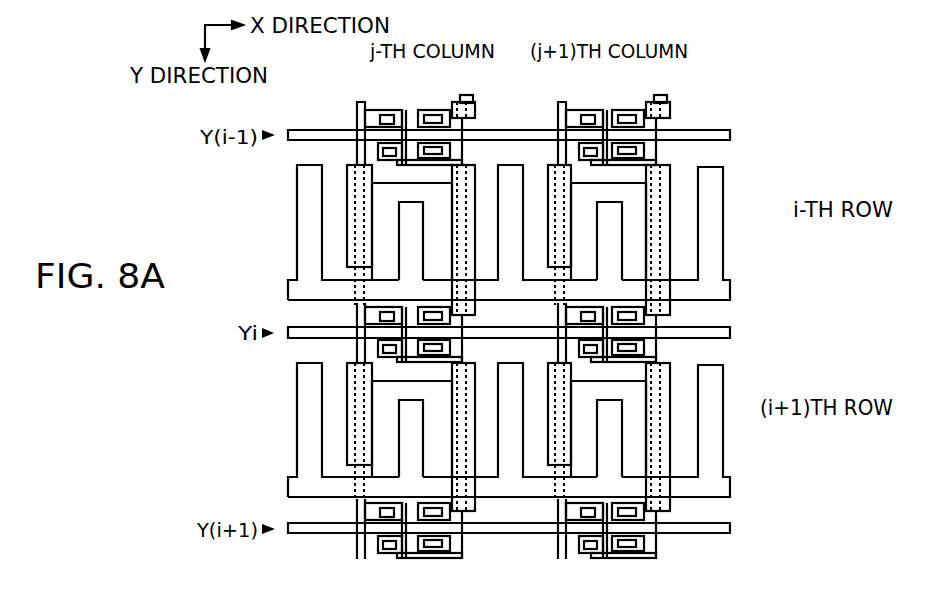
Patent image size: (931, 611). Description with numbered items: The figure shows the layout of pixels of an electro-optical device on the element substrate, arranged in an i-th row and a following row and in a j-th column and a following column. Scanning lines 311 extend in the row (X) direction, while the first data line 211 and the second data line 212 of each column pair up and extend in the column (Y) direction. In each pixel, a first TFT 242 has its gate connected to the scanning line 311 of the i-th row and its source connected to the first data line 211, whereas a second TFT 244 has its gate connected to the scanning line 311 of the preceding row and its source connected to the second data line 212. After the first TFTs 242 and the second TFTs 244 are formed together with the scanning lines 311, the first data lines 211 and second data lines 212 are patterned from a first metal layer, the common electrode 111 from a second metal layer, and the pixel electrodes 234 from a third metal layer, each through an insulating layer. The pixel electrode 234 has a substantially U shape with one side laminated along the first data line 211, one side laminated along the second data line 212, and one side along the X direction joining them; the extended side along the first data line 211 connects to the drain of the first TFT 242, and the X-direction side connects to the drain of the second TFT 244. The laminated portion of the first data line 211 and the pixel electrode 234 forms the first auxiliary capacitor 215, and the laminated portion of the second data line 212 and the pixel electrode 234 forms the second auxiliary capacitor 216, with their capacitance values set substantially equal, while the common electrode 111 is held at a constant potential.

The common electrode 111 is at (723, 266).
The first data line 211 is at (460, 108).
The second data line 212 is at (357, 120).
The first auxiliary capacitor 215 is at (473, 183).
The second auxiliary capacitor 216 is at (358, 210).
The pixel electrode 234 is at (380, 180).
The first TFT 242 is at (446, 330).
The second TFT 244 is at (385, 101).
The scanning line 311 is at (723, 143).